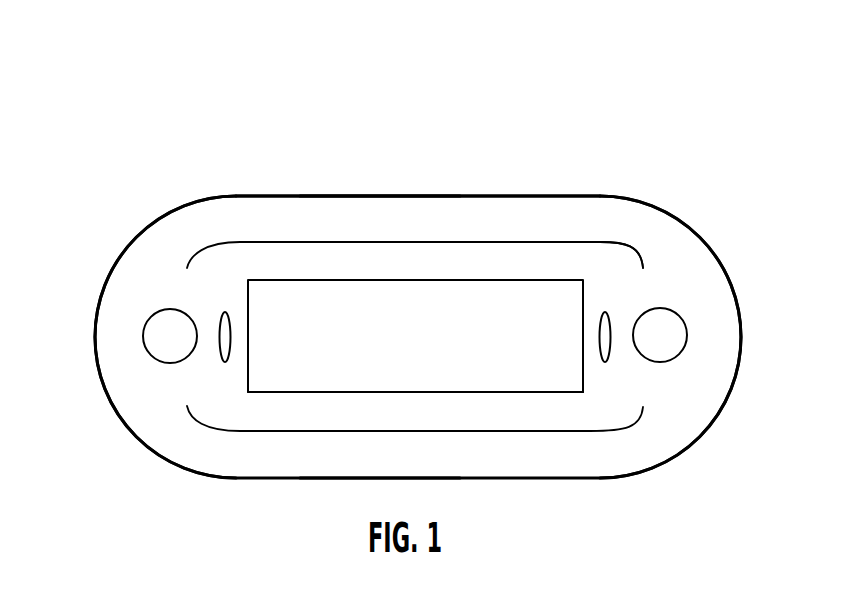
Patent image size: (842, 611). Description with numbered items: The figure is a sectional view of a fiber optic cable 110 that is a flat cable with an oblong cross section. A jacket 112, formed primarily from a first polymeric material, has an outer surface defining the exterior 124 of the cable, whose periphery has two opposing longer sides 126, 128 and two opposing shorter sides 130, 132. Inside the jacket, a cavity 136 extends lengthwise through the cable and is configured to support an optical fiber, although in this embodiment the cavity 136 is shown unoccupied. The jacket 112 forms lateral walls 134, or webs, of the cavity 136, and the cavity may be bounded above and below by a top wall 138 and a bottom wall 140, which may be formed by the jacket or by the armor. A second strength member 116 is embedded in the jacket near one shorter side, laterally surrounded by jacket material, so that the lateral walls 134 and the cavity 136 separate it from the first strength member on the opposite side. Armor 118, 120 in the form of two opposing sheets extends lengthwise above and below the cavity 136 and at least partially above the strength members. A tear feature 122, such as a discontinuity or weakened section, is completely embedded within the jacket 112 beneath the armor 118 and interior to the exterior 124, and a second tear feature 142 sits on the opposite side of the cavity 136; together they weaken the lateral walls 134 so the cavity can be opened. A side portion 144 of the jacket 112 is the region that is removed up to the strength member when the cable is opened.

The fiber optic cable 110 is at (657, 110).
The jacket 112 is at (618, 382).
The second strength member 116 is at (163, 336).
The armor 118 is at (442, 242).
The armor 120 is at (535, 432).
The tear feature 122 is at (618, 322).
The exterior 124 is at (282, 196).
The longer side 126 is at (378, 196).
The longer side 128 is at (337, 478).
The shorter side 130 is at (738, 333).
The shorter side 132 is at (95, 330).
The lateral wall 134 is at (595, 312).
The cavity 136 is at (268, 388).
The top wall of the cavity 138 is at (453, 265).
The bottom wall of the cavity 140 is at (455, 403).
The second tear feature 142 is at (223, 323).
The side portion 144 is at (667, 327).